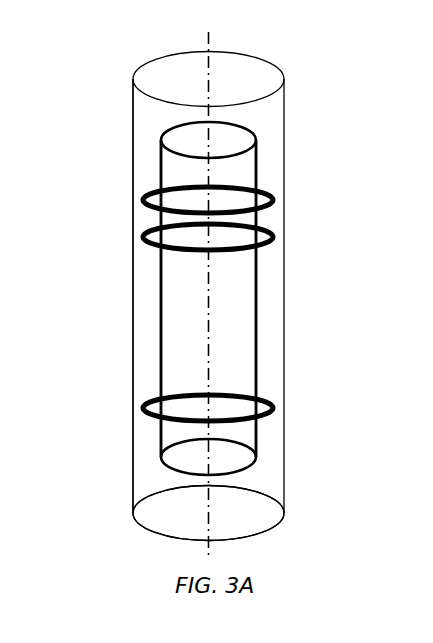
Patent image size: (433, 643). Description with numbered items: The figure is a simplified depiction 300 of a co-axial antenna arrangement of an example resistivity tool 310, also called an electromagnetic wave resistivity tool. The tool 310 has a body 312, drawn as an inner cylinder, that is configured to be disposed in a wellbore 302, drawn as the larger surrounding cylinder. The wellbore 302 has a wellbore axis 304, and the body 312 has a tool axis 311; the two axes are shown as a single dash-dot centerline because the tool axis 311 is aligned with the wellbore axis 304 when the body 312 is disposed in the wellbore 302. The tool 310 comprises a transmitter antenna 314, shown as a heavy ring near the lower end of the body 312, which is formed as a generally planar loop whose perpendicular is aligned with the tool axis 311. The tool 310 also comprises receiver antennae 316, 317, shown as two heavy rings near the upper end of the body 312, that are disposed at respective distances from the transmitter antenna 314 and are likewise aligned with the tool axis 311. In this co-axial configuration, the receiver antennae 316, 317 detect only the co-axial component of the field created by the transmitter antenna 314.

The simplified depiction of co-axial antenna arrangement 300 is at (112, 47).
The wellbore 302 is at (133, 475).
The wellbore axis 304 is at (209, 43).
The tool axis 311 is at (277, 285).
The resistivity tool 310 is at (150, 122).
The body 312 is at (163, 330).
The transmitter antenna 314 is at (143, 408).
The receiver antenna 316 is at (143, 237).
The receiver antenna 317 is at (143, 200).